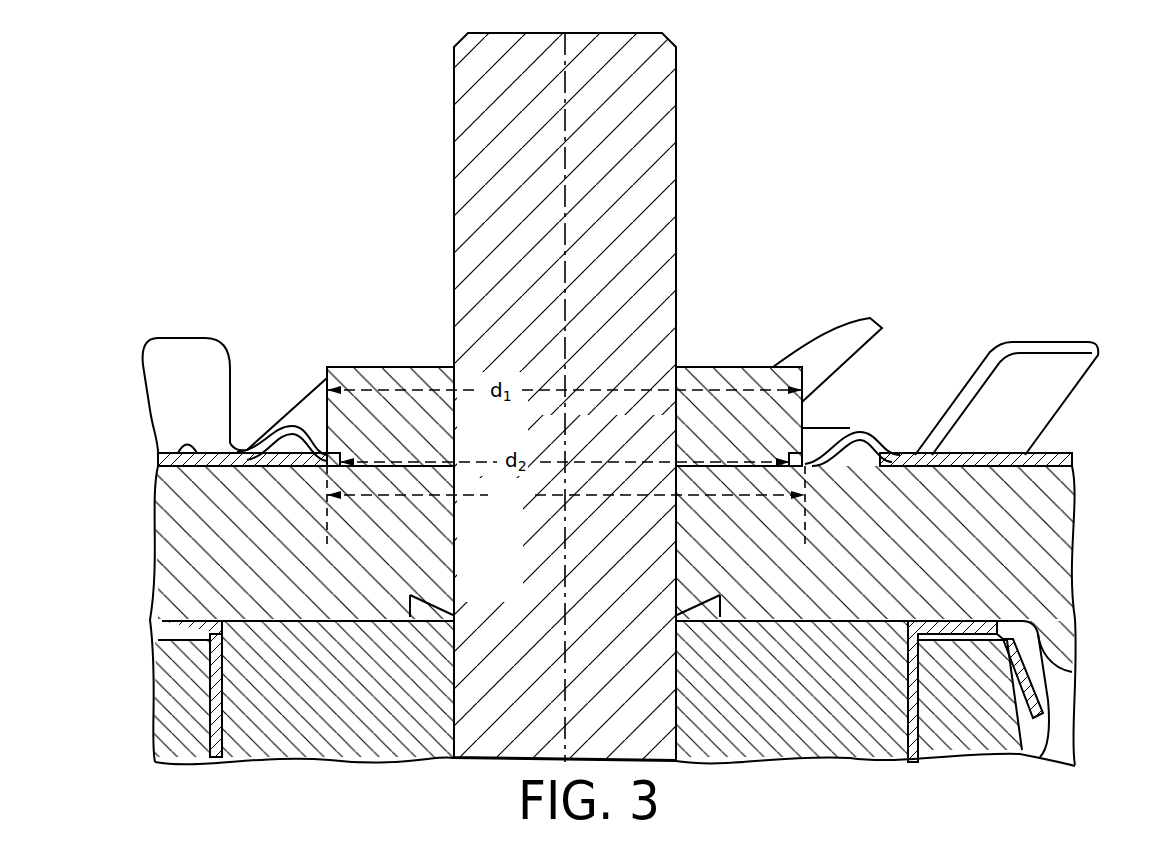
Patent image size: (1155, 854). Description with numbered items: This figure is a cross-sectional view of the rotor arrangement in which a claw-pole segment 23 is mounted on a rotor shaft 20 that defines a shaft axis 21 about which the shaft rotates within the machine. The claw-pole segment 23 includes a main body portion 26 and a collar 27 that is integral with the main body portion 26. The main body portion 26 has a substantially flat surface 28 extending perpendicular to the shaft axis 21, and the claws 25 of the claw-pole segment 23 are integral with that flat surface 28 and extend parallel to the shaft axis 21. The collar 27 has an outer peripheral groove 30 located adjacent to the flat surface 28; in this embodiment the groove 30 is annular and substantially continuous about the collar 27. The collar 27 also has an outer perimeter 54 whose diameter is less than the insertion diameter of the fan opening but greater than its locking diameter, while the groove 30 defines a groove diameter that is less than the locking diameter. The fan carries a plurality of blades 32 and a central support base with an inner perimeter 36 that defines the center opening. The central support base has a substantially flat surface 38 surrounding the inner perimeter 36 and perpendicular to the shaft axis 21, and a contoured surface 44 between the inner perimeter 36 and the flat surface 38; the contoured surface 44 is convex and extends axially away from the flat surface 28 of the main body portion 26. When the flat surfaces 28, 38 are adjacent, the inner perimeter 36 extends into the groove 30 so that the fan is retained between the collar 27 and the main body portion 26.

The rotor shaft 20 is at (677, 170).
The shaft axis 21 is at (567, 75).
The claw-pole segment 23 is at (1055, 512).
The claws 25 is at (1065, 700).
The main body portion 26 is at (462, 475).
The collar 27 is at (462, 367).
The substantially flat surface 28 is at (158, 466).
The outer peripheral groove 30 is at (276, 432).
The blades 32 is at (851, 327).
The inner perimeter 36 is at (843, 432).
The substantially flat surface 38 is at (928, 466).
The contoured surface 44 is at (878, 428).
The outer perimeter 54 is at (327, 375).